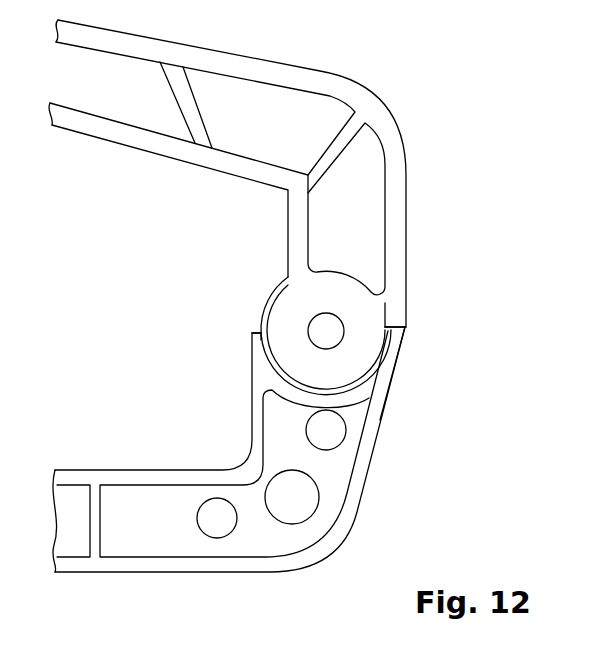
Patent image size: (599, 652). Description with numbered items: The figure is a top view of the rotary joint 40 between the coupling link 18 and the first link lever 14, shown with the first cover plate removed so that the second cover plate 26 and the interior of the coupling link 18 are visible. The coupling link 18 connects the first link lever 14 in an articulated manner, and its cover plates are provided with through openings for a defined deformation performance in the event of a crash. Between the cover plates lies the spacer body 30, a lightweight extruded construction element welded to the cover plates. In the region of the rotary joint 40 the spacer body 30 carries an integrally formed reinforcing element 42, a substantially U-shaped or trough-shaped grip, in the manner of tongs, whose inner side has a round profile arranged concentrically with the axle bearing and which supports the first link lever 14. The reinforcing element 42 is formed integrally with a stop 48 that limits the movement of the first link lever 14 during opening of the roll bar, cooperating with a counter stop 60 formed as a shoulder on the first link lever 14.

The first link lever 14 is at (302, 80).
The coupling link 18 is at (238, 421).
The second cover plate 26 is at (338, 268).
The spacer body 30 is at (388, 396).
The rotary joint 40 is at (234, 328).
The reinforcing element 42 is at (277, 368).
The stop 48 is at (404, 329).
The counter stop 60 is at (396, 324).